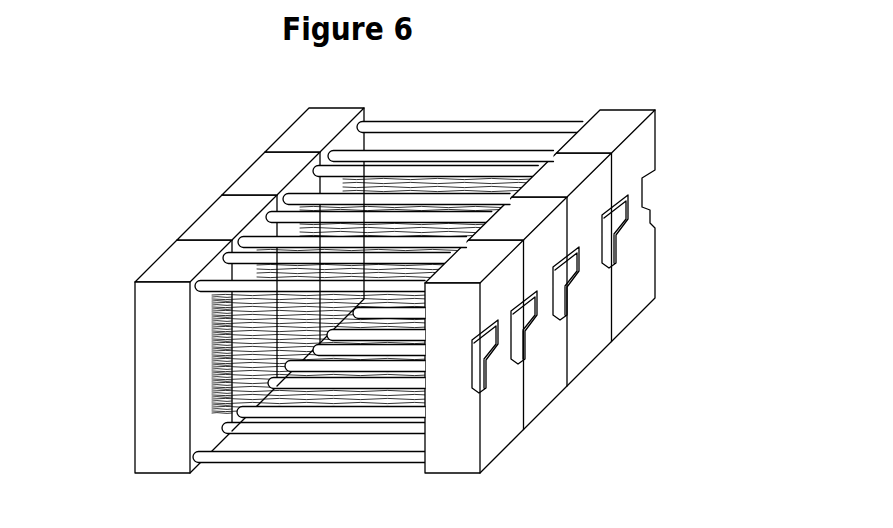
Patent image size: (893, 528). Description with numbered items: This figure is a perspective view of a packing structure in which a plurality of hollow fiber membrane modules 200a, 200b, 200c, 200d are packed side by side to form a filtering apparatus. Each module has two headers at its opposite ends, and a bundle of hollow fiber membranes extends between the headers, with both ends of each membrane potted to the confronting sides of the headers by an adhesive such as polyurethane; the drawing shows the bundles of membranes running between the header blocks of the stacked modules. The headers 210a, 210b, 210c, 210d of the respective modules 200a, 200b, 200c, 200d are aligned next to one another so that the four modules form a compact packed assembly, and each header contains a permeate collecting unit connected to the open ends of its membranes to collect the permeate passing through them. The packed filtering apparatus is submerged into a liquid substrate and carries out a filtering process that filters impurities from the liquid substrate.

The hollow fiber membrane module 200a is at (145, 256).
The hollow fiber membrane module 200b is at (190, 213).
The hollow fiber membrane module 200c is at (233, 168).
The hollow fiber membrane module 200d is at (278, 125).
The header 210a is at (503, 431).
The header 210b is at (547, 395).
The header 210c is at (590, 348).
The header 210d is at (628, 293).